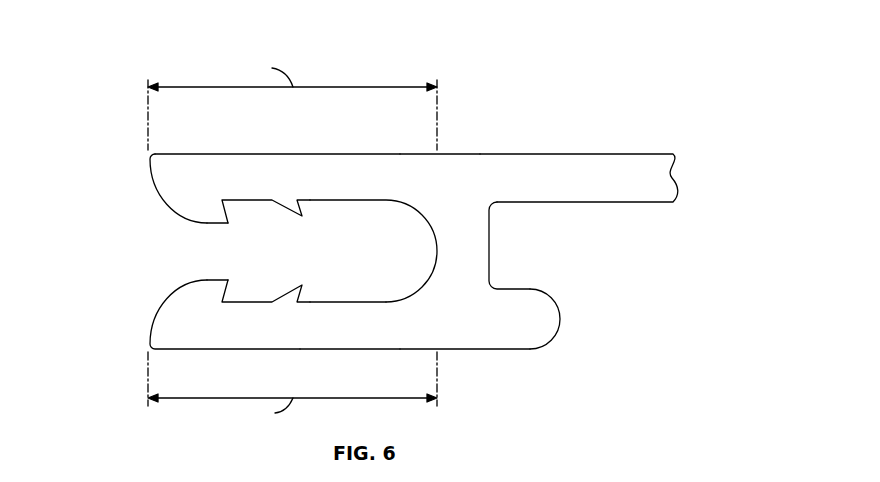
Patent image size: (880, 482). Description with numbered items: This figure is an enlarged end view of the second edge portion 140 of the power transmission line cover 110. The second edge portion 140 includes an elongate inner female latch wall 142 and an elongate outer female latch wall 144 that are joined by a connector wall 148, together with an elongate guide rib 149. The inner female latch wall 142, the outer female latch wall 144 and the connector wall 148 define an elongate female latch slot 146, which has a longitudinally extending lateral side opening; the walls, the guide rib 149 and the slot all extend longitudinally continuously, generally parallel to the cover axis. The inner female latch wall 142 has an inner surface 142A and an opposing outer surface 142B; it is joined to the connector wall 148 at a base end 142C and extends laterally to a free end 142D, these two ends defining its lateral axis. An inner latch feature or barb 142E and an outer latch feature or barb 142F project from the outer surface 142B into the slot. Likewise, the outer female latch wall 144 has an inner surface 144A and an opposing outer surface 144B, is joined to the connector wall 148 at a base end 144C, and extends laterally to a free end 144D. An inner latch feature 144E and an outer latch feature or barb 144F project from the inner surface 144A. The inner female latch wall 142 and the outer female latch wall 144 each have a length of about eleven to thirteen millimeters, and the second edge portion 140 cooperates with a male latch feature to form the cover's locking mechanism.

The second edge portion 140 is at (110, 58).
The panel 110 is at (612, 162).
The inner female latch wall 142 is at (271, 202).
The inner surface 142A is at (312, 153).
The outer surface 142B is at (323, 201).
The base end 142C is at (417, 153).
The free end 142D is at (150, 173).
The inner latch feature or barb 142E is at (292, 214).
The outer latch feature or barb 142F is at (210, 222).
The outer female latch wall 144 is at (295, 314).
The inner surface 144A is at (368, 302).
The outer surface 144B is at (403, 350).
The base end 144C is at (430, 322).
The free end 144D is at (150, 330).
The inner latch feature 144E is at (288, 292).
The outer latch feature or barb 144F is at (220, 290).
The female latch slot 146 is at (192, 264).
The connector wall 148 is at (473, 227).
The guide rib 149 is at (537, 322).